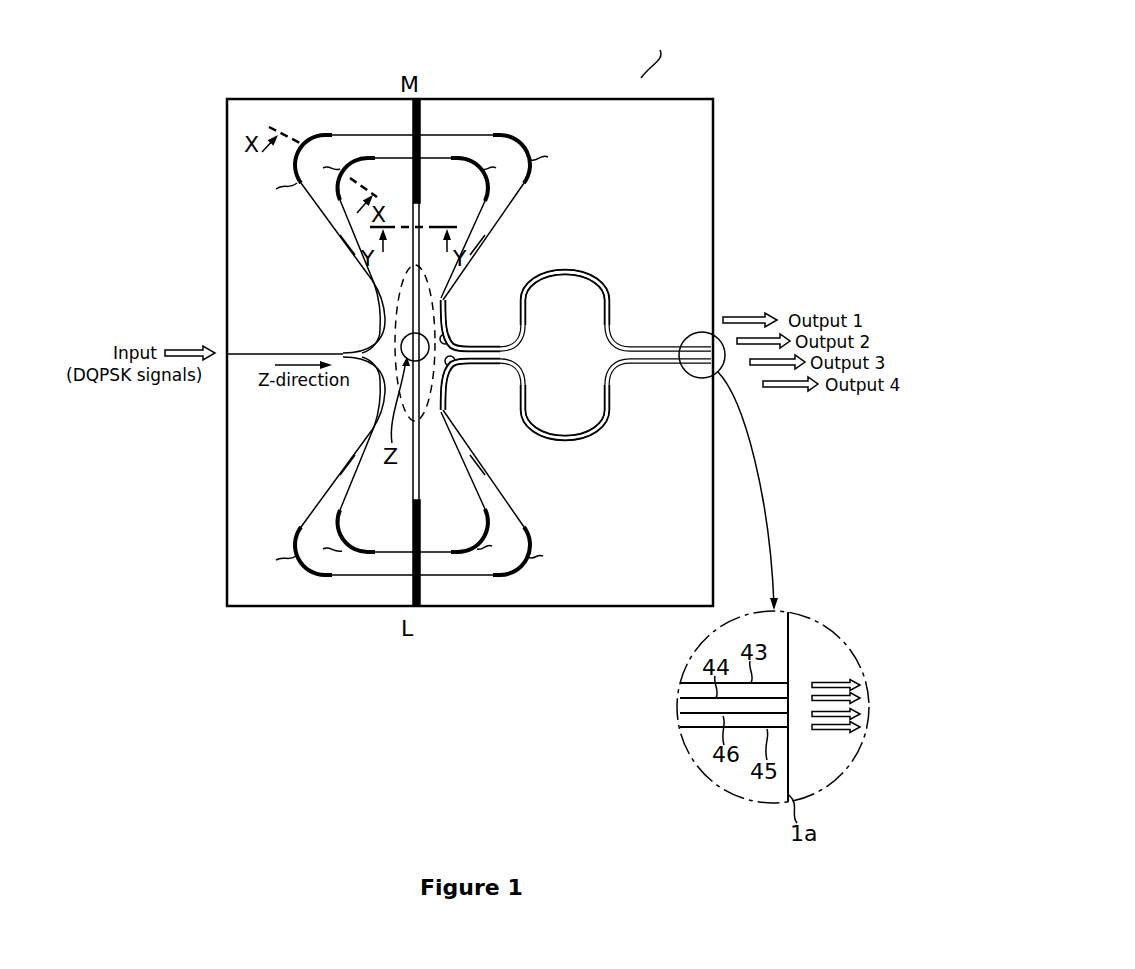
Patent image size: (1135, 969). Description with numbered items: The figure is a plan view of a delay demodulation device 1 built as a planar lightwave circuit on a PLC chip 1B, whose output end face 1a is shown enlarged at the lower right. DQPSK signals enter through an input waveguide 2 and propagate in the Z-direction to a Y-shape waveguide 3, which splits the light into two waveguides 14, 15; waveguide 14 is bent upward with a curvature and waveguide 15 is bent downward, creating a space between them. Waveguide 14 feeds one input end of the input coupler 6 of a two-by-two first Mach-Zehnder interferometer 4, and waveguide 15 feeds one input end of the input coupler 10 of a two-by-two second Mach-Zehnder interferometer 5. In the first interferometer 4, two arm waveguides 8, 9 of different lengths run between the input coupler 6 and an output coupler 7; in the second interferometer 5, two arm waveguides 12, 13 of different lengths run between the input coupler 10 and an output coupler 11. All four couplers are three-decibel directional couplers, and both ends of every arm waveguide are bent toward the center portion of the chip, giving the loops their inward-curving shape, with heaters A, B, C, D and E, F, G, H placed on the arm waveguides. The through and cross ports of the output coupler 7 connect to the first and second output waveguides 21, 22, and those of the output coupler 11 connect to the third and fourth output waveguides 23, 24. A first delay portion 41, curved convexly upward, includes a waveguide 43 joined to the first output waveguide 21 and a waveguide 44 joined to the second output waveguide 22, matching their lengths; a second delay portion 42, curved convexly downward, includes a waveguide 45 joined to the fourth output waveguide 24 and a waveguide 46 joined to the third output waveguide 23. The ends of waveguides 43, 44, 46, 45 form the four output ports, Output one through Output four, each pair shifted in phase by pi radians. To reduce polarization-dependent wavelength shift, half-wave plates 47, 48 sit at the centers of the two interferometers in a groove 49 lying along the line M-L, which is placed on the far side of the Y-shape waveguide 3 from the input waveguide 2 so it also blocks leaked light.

The delay demodulation device 1 is at (668, 46).
The PLC chip 1B is at (713, 118).
The output end face of substrate 1a is at (713, 190).
The input waveguide 2 is at (250, 358).
The Y-shape waveguide 3 is at (332, 355).
The first Mach-Zehnder interferometer 4 is at (411, 179).
The second Mach-Zehnder interferometer 5 is at (410, 527).
The input coupler 6 is at (353, 268).
The output coupler 7 is at (468, 268).
The arm waveguide 8 is at (362, 137).
The arm waveguide 9 is at (398, 160).
The input coupler 10 is at (362, 441).
The output coupler 11 is at (460, 439).
The arm waveguide 12 is at (365, 576).
The arm waveguide 13 is at (381, 550).
The waveguide 14 is at (362, 345).
The waveguide 15 is at (362, 364).
The first output waveguide 21 is at (485, 318).
The second output waveguide 22 is at (455, 340).
The third output waveguide 23 is at (450, 370).
The fourth output waveguide 24 is at (440, 405).
The first delay portion 41 is at (576, 286).
The second delay portion 42 is at (575, 429).
The waveguide 43 is at (566, 270).
The waveguide 44 is at (569, 280).
The waveguide 45 is at (560, 443).
The waveguide 46 is at (566, 433).
The half-wave plate 47 is at (420, 108).
The half-wave plate 48 is at (420, 592).
The groove 49 is at (420, 471).